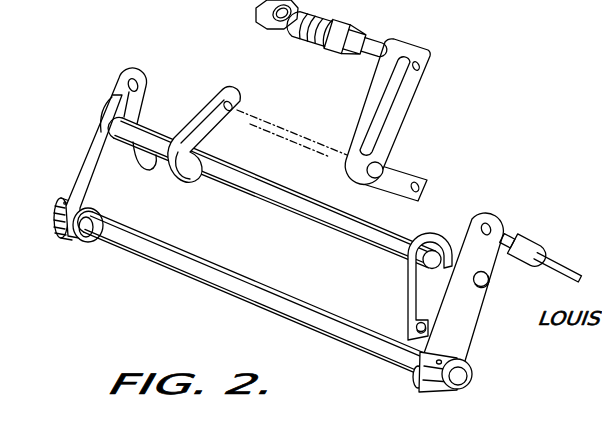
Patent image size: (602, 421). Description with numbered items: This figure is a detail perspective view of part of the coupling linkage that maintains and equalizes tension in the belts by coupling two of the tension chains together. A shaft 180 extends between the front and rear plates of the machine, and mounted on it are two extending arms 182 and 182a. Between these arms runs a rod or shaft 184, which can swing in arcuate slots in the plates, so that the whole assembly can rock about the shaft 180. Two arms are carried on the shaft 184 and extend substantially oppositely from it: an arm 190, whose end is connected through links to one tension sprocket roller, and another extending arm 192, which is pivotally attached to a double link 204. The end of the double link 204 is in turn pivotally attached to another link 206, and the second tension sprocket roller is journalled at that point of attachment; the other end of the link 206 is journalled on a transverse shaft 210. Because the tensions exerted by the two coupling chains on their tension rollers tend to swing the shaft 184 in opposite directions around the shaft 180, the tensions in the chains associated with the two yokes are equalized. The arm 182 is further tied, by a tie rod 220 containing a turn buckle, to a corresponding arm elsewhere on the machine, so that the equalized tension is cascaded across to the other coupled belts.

The shaft 180 is at (148, 250).
The extending arm 182 is at (452, 343).
The extending arm 182a is at (93, 195).
The rod or shaft 184 is at (290, 200).
The arm 190 is at (418, 288).
The extending arm 192 is at (217, 97).
The double link 204 is at (403, 168).
The link 206 is at (397, 105).
The transverse shaft 210 is at (372, 52).
The tie rod 220 is at (552, 253).